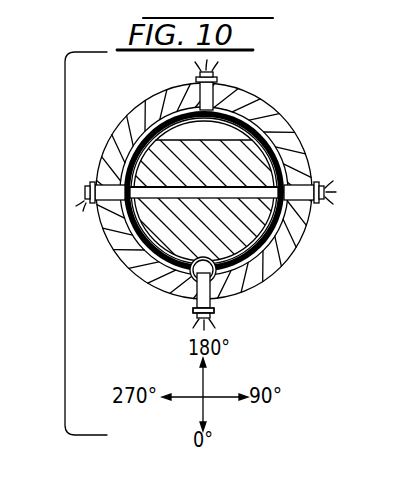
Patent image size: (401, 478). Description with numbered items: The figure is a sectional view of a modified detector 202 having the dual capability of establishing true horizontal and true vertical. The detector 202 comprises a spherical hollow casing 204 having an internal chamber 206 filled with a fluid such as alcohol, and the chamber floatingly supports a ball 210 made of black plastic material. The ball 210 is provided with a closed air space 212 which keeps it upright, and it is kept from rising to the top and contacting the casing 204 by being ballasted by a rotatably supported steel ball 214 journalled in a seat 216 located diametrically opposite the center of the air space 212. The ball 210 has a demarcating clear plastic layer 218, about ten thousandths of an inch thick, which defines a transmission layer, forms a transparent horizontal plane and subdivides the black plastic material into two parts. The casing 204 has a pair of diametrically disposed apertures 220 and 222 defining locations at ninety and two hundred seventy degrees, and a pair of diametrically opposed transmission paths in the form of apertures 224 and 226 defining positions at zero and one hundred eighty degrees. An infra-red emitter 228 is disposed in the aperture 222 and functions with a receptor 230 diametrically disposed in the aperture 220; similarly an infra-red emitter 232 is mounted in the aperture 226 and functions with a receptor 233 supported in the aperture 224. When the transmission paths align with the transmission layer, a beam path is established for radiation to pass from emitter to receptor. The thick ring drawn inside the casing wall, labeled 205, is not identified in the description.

The detector 202 is at (292, 114).
The spherical hollow casing 204 is at (291, 262).
The inner sleeve ring 205 is at (281, 160).
The internal chamber 206 is at (158, 130).
The ball 210 is at (268, 218).
The closed air space 212 is at (223, 130).
The steel ball 214 is at (195, 302).
The seat 216 is at (195, 278).
The clear plastic layer 218 is at (152, 192).
The aperture 220 is at (114, 202).
The aperture 222 is at (307, 178).
The aperture 224 is at (196, 92).
The aperture 226 is at (211, 300).
The infra-red emitter 228 is at (328, 193).
The receptor 230 is at (85, 193).
The infra-red emitter 232 is at (204, 330).
The receptor 233 is at (212, 74).